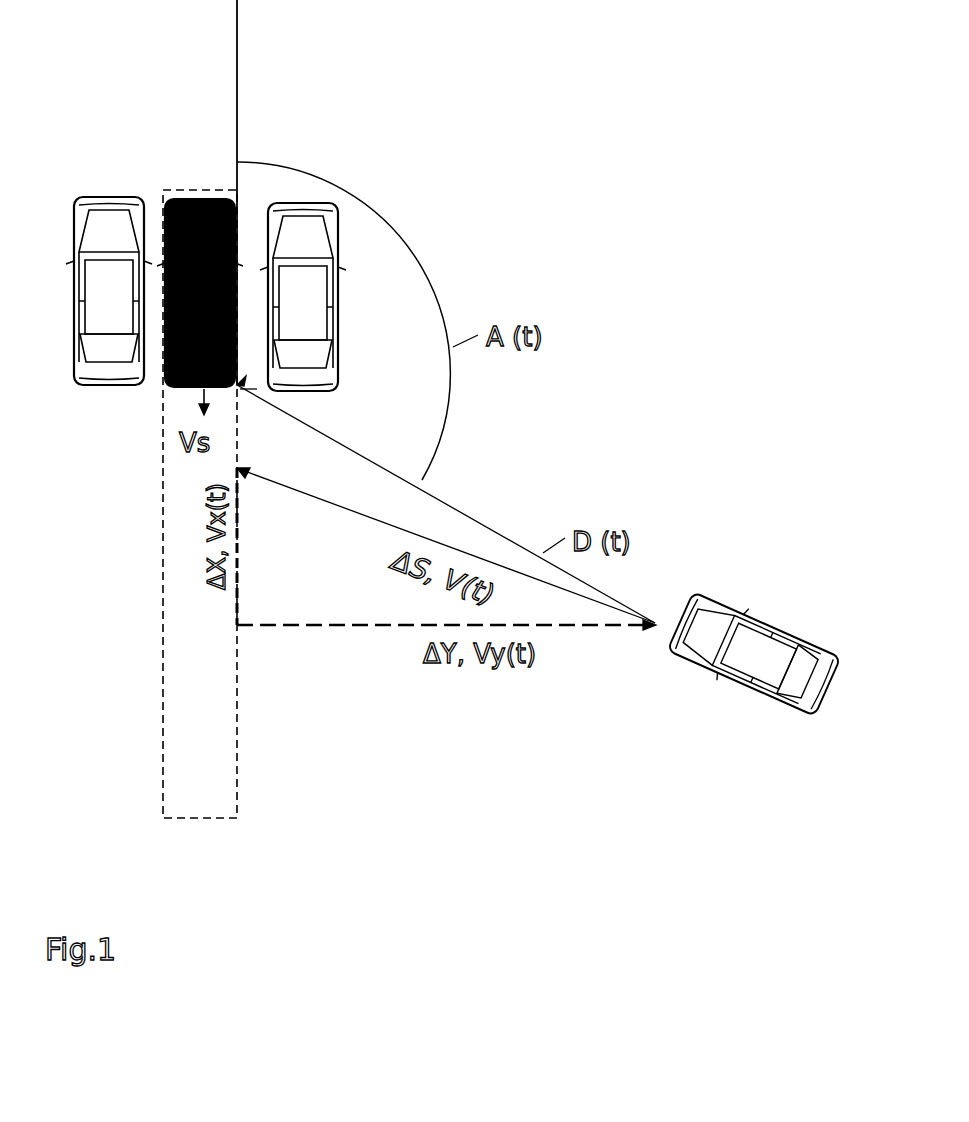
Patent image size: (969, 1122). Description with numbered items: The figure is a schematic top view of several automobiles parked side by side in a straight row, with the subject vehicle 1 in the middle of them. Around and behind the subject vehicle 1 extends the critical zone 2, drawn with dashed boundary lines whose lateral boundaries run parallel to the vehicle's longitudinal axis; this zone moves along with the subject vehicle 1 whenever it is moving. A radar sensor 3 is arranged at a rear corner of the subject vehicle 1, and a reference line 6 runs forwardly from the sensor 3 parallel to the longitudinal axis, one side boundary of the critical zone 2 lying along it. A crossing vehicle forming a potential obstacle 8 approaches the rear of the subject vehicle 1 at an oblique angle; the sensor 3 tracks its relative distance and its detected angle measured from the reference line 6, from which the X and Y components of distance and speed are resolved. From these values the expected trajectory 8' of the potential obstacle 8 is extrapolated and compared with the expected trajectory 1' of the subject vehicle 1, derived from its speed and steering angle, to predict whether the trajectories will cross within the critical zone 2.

The subject vehicle 1 is at (188, 252).
The expected trajectory of the subject vehicle 1' is at (146, 414).
The critical zone 2 is at (239, 734).
The radar sensor 3 is at (243, 379).
The reference line 6 is at (237, 37).
The potential obstacle 8 is at (753, 610).
The expected trajectory of the potential obstacle 8' is at (446, 536).